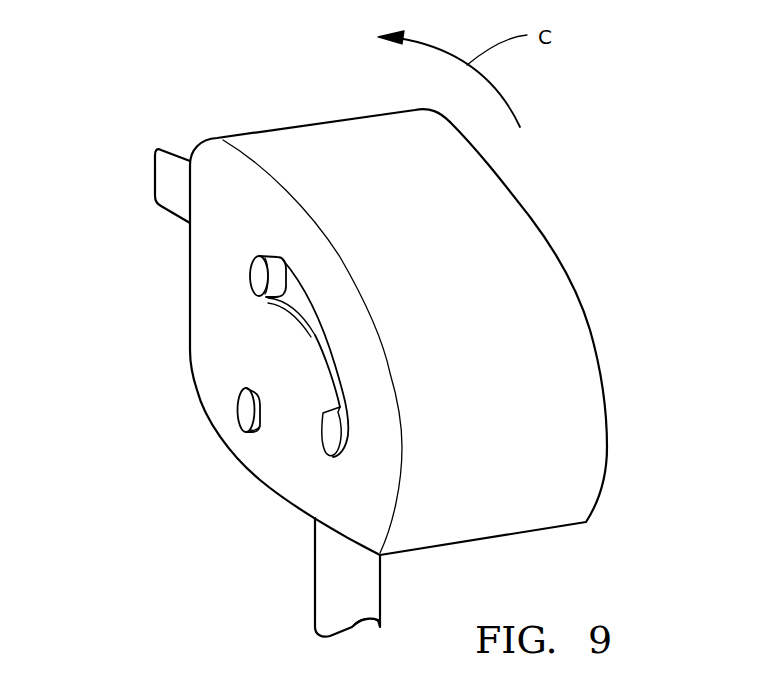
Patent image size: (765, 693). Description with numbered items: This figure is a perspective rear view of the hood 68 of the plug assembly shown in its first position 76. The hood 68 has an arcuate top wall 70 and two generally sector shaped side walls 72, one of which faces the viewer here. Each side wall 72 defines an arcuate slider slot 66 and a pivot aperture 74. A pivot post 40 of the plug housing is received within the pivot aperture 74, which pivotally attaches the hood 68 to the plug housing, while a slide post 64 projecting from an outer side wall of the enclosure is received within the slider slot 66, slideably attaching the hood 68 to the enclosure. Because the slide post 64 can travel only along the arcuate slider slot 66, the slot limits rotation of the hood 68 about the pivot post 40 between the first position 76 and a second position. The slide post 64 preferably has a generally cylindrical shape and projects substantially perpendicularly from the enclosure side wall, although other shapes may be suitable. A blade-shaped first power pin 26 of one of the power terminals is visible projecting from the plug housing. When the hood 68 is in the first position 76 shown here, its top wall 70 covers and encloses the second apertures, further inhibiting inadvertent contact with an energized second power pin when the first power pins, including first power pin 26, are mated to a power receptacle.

The first power pin 26 is at (170, 180).
The pivot post 40 is at (238, 410).
The slide post 64 is at (252, 273).
The slider slot 66 is at (321, 320).
The hood 68 is at (322, 130).
The top wall 70 is at (525, 292).
The side wall 72 is at (223, 367).
The pivot aperture 74 is at (255, 430).
The first position 76 is at (266, 300).